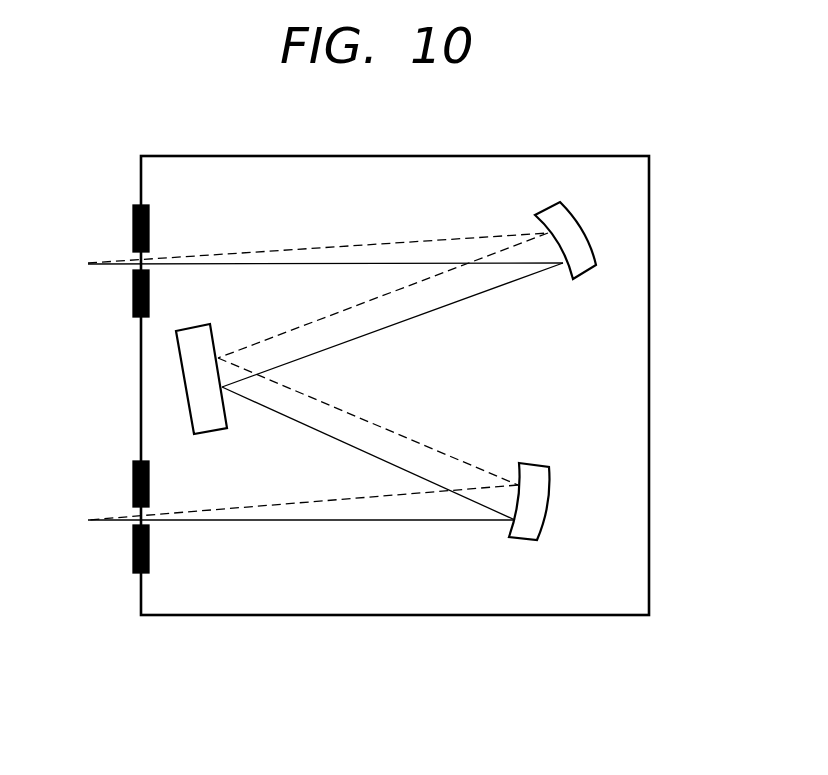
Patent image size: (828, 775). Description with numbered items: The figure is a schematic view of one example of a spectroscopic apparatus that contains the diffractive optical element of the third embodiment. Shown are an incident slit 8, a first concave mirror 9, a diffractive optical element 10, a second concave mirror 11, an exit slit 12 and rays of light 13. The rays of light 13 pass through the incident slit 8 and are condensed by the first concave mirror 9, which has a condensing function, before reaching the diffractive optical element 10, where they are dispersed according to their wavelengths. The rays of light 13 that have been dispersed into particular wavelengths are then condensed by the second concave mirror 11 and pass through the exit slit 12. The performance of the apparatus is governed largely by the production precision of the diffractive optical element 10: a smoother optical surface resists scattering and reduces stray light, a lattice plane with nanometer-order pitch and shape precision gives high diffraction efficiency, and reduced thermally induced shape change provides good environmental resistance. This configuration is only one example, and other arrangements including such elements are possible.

The incident slit 8 is at (123, 240).
The first concave mirror 9 is at (587, 228).
The diffractive optical element 10 is at (182, 373).
The second concave mirror 11 is at (549, 502).
The exit slit 12 is at (123, 538).
The rays of light 13 is at (411, 264).